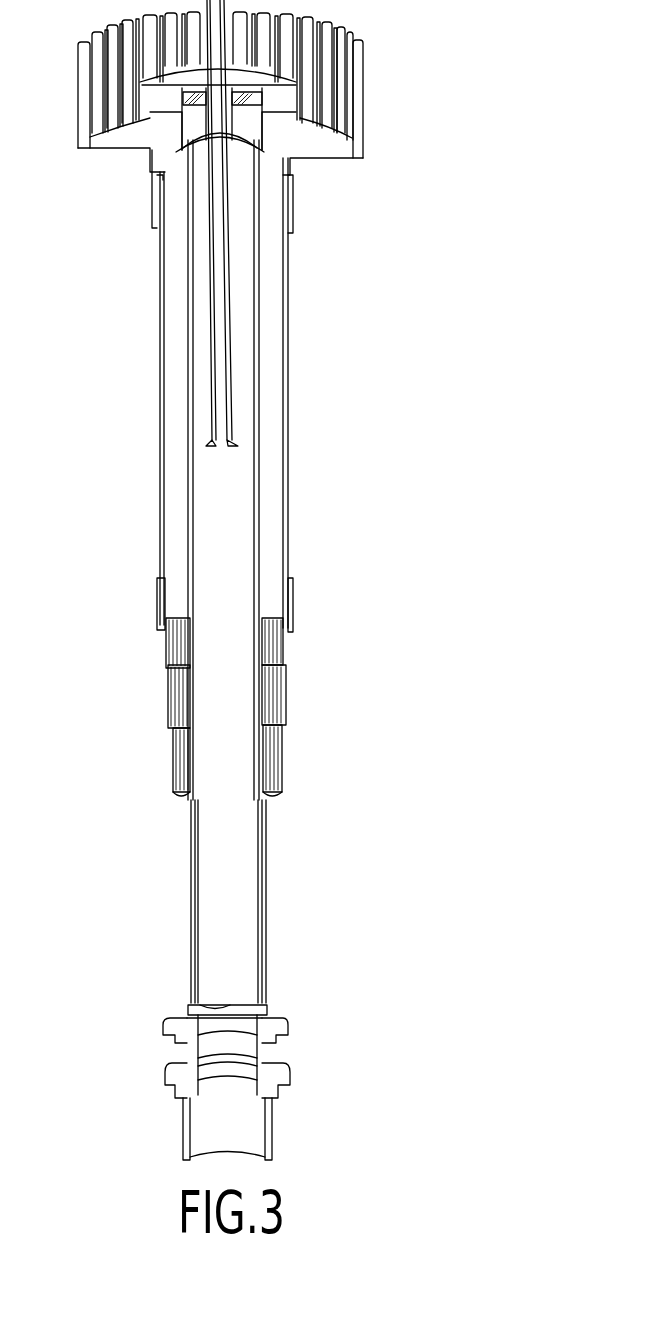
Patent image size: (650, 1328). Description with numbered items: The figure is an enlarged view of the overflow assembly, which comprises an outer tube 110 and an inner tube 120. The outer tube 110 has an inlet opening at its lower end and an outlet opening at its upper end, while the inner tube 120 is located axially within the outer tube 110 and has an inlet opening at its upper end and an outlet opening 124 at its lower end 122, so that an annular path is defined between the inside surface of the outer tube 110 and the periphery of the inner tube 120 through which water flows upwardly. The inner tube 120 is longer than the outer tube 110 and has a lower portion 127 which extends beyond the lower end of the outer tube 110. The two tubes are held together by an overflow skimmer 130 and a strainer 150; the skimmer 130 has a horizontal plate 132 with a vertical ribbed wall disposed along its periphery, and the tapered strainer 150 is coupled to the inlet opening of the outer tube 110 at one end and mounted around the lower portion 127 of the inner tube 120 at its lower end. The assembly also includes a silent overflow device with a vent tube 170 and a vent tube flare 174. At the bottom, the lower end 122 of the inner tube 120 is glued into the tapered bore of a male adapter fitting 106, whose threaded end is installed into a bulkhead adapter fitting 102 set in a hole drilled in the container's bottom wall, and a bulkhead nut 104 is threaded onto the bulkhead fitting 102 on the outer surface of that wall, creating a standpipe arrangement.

The overflow skimmer 130 is at (412, 90).
The horizontal plate 132 is at (135, 135).
The outer tube 110 is at (273, 405).
The inner tube 120 is at (203, 472).
The vent tube 170 is at (218, 328).
The vent tube flare 174 is at (229, 440).
The strainer 150 is at (283, 708).
The lower portion 127 is at (190, 783).
The male adapter fitting 106 is at (268, 968).
The lower end 122 is at (198, 1005).
The bulkhead adapter fitting 102 is at (285, 1027).
The outlet opening 124 is at (203, 1010).
The bulkhead nut 104 is at (292, 1073).